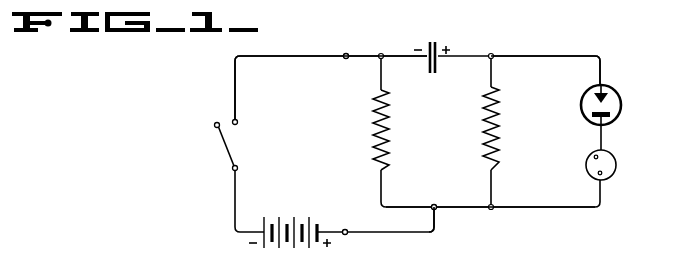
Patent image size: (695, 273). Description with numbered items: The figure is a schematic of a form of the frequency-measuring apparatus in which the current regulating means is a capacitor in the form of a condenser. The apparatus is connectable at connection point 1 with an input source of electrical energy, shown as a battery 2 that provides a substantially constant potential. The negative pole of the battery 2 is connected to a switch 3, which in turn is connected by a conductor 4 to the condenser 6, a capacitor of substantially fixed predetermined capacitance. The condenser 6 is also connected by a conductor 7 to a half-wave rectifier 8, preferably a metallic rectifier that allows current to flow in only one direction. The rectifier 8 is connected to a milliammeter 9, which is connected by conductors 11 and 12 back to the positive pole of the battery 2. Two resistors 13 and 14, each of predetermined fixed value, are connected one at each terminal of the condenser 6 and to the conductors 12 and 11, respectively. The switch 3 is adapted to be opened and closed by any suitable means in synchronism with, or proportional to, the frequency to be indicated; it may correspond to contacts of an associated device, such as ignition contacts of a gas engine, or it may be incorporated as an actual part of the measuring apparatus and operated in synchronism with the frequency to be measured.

The connection point 1 is at (348, 53).
The battery 2 is at (273, 217).
The switch 3 is at (224, 142).
The conductor 4 is at (235, 100).
The condenser 6 is at (436, 77).
The conductor 7 is at (473, 53).
The half-wave rectifier 8 is at (622, 101).
The milliammeter 9 is at (617, 165).
The conductor 11 is at (518, 212).
The conductor 12 is at (430, 233).
The resistor 13 is at (391, 160).
The resistor 14 is at (500, 160).